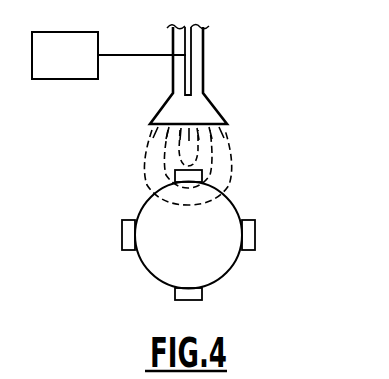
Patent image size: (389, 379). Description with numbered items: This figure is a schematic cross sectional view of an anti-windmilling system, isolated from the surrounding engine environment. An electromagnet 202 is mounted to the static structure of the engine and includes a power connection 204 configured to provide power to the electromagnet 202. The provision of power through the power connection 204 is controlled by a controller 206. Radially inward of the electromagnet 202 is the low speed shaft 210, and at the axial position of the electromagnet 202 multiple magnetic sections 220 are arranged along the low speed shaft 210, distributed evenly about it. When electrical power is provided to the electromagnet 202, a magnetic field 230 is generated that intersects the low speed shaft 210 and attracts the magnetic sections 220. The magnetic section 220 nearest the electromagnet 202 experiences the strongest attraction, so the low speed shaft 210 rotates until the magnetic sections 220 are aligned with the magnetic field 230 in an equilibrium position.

The electromagnet 202 is at (203, 120).
The power connection 204 is at (188, 79).
The controller 206 is at (88, 70).
The low speed shaft 210 is at (208, 263).
The magnetic sections 220 is at (201, 171).
The magnetic field 230 is at (157, 152).